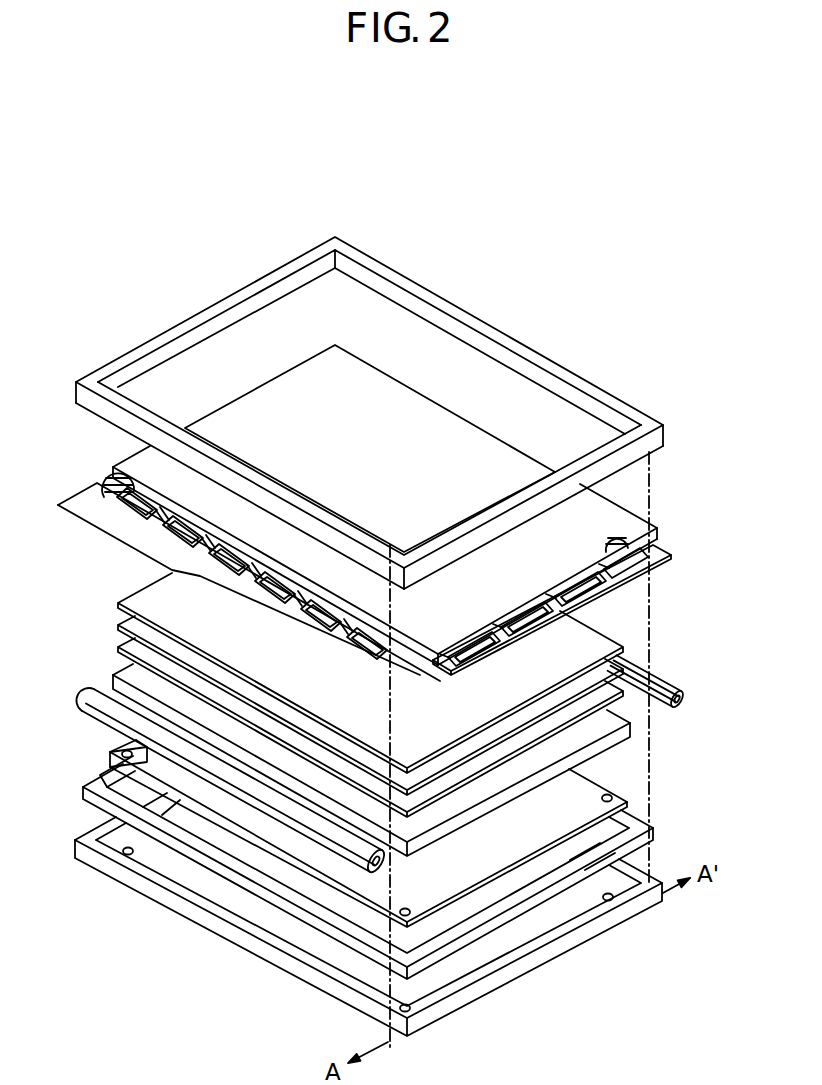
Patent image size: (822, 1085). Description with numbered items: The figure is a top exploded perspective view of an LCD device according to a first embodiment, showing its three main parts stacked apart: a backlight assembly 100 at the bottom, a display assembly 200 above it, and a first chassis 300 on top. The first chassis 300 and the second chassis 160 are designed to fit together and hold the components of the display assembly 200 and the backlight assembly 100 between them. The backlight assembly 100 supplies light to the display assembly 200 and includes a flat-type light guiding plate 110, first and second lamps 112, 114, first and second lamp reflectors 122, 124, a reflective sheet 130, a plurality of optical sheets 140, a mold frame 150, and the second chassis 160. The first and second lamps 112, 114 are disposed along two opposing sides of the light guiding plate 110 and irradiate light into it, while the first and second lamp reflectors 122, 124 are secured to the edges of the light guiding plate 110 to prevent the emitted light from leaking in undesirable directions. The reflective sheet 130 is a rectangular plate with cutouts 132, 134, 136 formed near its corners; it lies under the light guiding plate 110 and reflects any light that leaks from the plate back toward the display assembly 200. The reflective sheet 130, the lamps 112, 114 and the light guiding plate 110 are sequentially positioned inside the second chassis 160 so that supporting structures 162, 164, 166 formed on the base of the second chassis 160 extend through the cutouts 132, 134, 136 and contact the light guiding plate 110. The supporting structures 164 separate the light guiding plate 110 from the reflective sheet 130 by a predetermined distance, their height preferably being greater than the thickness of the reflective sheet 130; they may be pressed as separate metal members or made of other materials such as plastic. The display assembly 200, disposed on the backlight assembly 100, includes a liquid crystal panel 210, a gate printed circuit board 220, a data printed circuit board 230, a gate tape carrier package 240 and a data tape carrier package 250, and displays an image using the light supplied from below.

The backlight assembly 100 is at (741, 968).
The light guiding plate 110 is at (600, 740).
The first lamp 112 is at (681, 712).
The second lamp 114 is at (374, 872).
The first lamp reflector 122 is at (674, 692).
The second lamp reflector 124 is at (86, 697).
The reflective sheet 130 is at (615, 788).
The cutout 132 is at (406, 908).
The cutout 134 is at (603, 799).
The cutout 136 is at (122, 754).
The optical sheets 140 is at (100, 605).
The mold frame 150 is at (655, 836).
The second chassis 160 is at (508, 980).
The supporting structure 162 is at (410, 1012).
The supporting structure 164 is at (612, 900).
The supporting structure 166 is at (127, 855).
The display assembly 200 is at (742, 520).
The liquid crystal panel 210 is at (610, 515).
The gate printed circuit board 220 is at (650, 560).
The data printed circuit board 230 is at (107, 517).
The gate tape carrier package 240 is at (632, 543).
The data tape carrier package 250 is at (108, 471).
The first chassis 300 is at (664, 452).